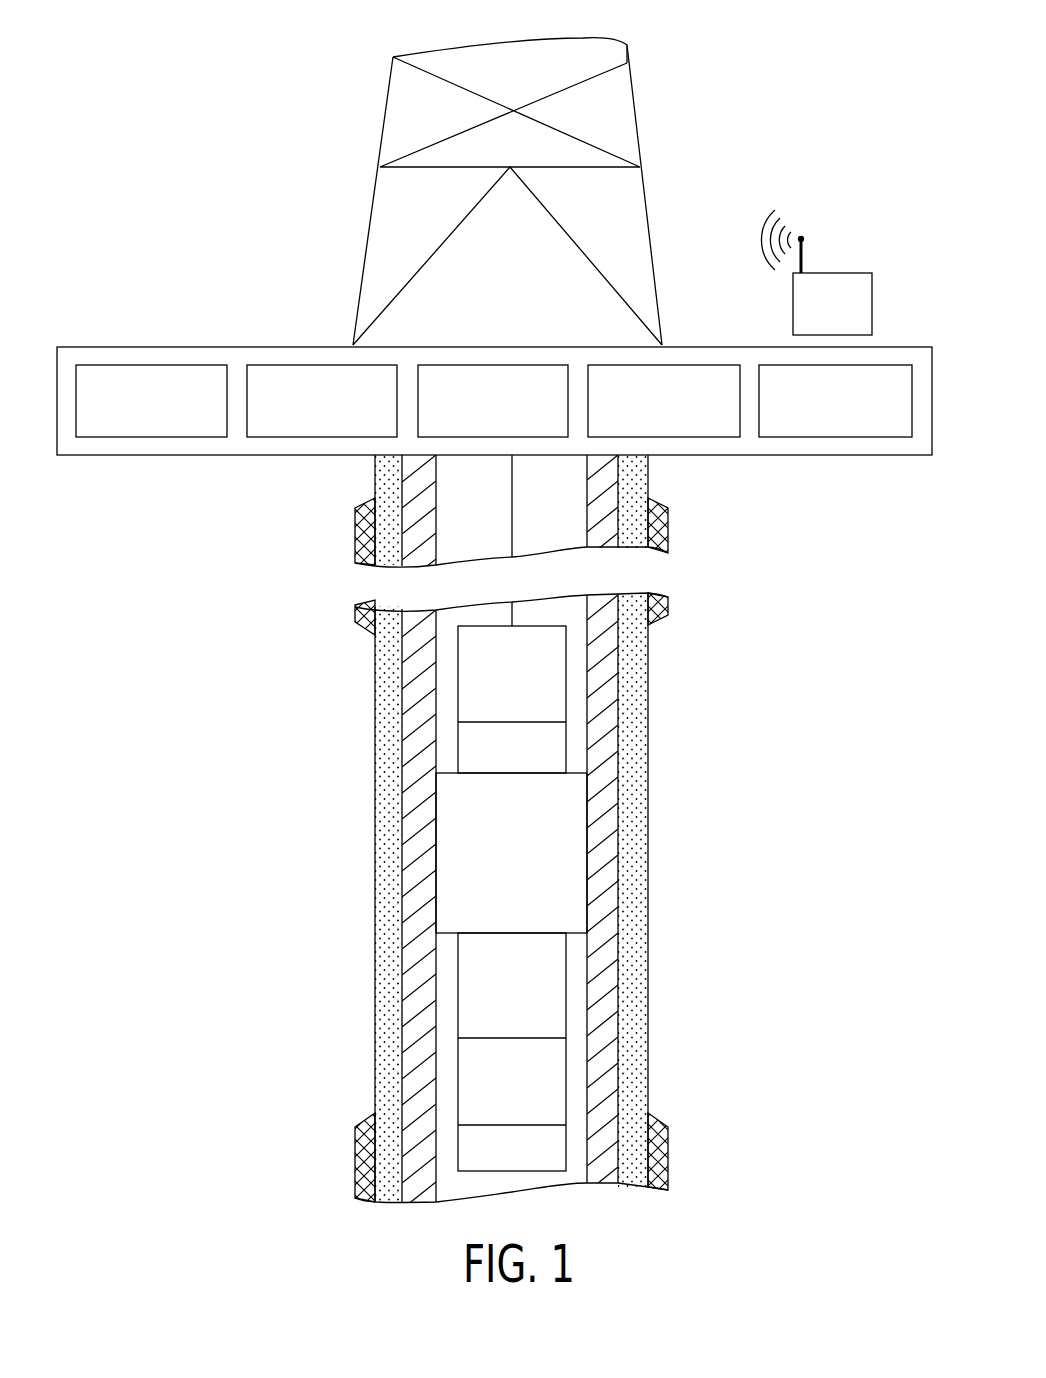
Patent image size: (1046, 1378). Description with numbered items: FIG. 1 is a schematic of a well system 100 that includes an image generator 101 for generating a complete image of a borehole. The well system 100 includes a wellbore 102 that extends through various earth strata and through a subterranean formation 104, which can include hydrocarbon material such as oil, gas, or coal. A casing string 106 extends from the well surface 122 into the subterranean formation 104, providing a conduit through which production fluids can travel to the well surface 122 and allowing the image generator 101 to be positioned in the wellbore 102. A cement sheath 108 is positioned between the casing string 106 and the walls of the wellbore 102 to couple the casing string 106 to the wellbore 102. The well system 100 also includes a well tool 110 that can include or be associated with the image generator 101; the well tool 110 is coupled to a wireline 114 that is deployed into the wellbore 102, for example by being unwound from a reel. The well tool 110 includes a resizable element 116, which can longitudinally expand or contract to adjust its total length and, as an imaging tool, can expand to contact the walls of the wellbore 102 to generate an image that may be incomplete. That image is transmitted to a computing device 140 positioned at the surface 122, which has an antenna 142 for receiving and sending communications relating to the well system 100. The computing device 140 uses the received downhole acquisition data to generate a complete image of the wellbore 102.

The well system 100 is at (210, 207).
The image generator 101 is at (260, 846).
The wellbore 102 is at (640, 467).
The subterranean formation 104 is at (660, 525).
The casing string 106 is at (424, 705).
The cement sheath 108 is at (388, 768).
The well tool 110 is at (478, 683).
The wireline 114 is at (512, 520).
The resizable element 116 is at (555, 857).
The well surface 122 is at (508, 346).
The computing device 140 is at (872, 310).
The antenna 142 is at (805, 262).